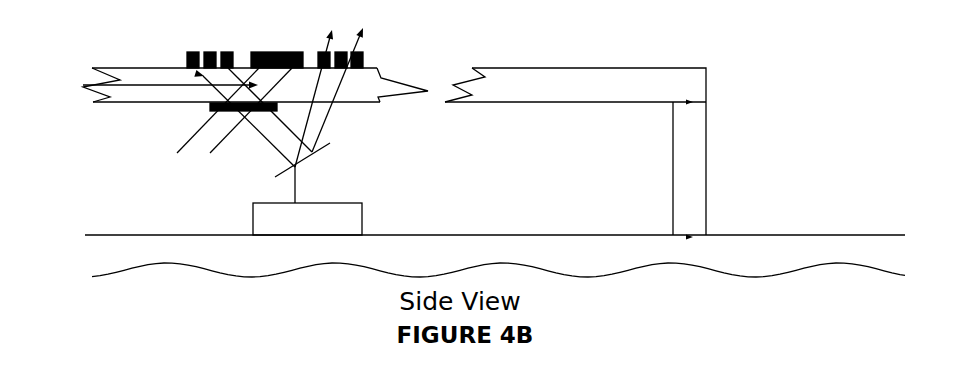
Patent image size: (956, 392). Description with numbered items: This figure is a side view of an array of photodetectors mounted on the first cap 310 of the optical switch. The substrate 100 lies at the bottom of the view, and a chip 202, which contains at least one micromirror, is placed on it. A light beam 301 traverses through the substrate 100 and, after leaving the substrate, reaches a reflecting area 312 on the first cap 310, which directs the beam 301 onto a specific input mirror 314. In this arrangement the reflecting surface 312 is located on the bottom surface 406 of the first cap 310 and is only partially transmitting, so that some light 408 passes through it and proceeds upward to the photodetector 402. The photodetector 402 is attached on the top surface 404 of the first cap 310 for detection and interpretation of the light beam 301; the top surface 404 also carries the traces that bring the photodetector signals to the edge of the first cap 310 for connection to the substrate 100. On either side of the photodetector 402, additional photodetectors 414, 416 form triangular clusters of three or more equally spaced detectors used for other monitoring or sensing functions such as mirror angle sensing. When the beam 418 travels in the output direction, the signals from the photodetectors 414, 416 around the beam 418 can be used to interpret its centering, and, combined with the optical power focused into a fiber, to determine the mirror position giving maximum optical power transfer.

The substrate 100 is at (100, 260).
The chip 202 is at (243, 219).
The light beam 301 is at (250, 135).
The first cap 310 is at (715, 75).
The reflecting area 312 is at (200, 108).
The input mirror 314 is at (267, 169).
The photodetector 402 is at (248, 47).
The top surface 404 is at (383, 61).
The bottom surface 406 is at (360, 108).
The light 408 is at (83, 87).
The photodetector 414 is at (200, 72).
The photodetector 416 is at (325, 84).
The beam 418 is at (197, 74).